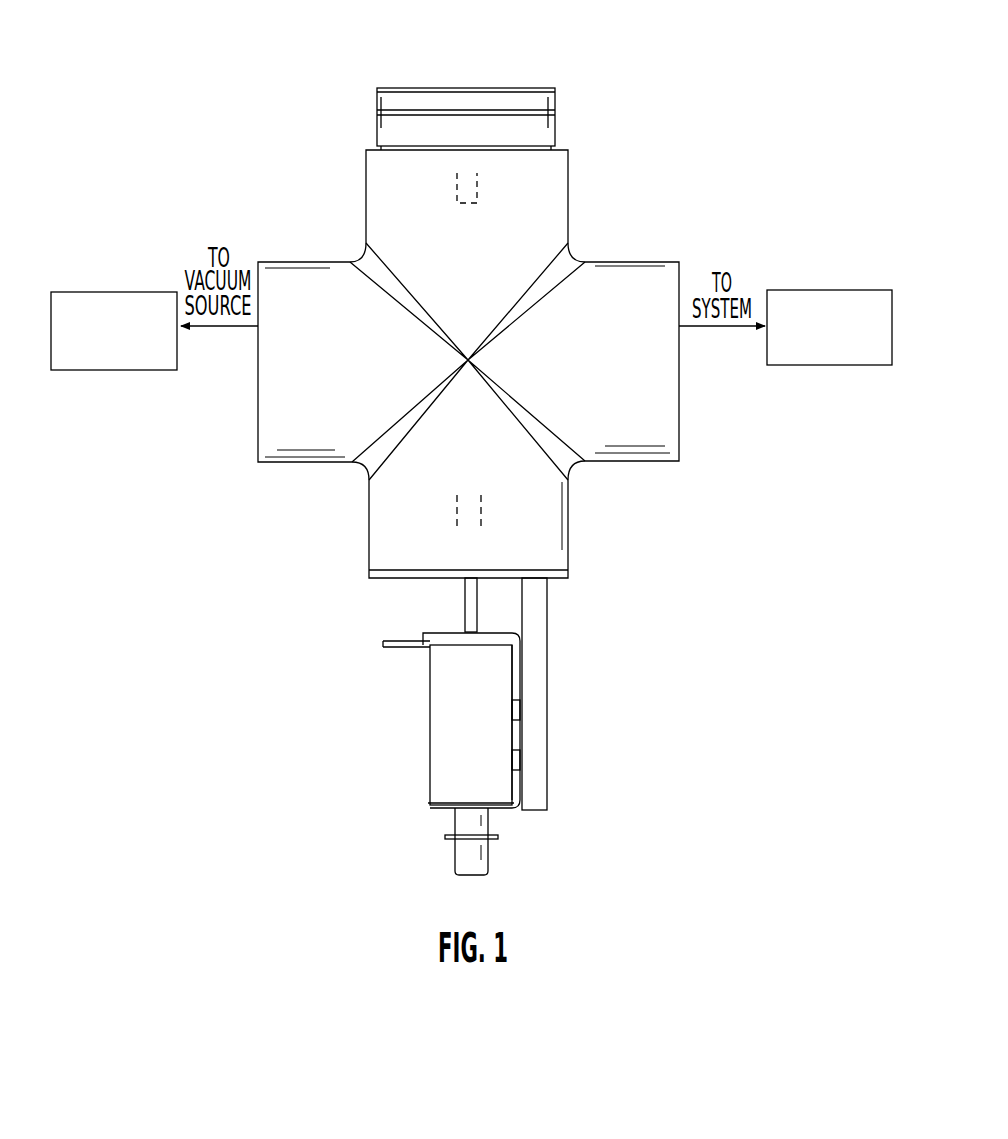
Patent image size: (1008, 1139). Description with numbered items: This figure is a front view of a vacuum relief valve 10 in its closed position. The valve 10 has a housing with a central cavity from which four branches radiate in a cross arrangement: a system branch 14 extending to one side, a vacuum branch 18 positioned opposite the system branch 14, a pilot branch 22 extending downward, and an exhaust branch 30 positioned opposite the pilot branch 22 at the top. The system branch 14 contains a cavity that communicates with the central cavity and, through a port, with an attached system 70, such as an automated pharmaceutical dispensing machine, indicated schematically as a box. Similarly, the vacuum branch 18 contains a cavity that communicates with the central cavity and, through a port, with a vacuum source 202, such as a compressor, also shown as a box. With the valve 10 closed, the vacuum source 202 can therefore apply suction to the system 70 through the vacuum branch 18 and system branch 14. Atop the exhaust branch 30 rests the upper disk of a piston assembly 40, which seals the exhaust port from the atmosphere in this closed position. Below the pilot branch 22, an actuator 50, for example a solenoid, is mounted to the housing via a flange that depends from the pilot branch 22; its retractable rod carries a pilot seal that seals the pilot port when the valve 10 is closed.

The vacuum relief valve 10 is at (486, 311).
The system branch 14 is at (625, 246).
The vacuum branch 18 is at (313, 484).
The pilot branch 22 is at (601, 532).
The exhaust branch 30 is at (585, 190).
The piston assembly 40 is at (519, 62).
The actuator 50 is at (521, 834).
The system 70 is at (847, 290).
The vacuum source 202 is at (112, 291).